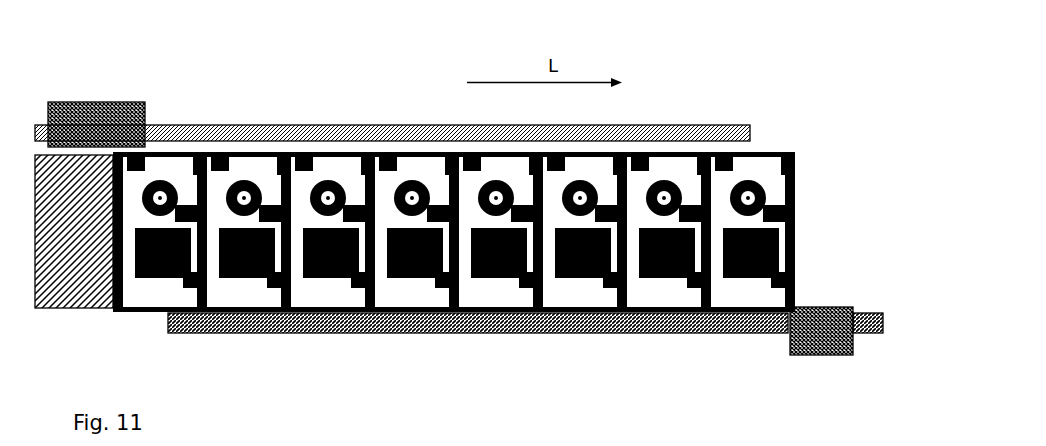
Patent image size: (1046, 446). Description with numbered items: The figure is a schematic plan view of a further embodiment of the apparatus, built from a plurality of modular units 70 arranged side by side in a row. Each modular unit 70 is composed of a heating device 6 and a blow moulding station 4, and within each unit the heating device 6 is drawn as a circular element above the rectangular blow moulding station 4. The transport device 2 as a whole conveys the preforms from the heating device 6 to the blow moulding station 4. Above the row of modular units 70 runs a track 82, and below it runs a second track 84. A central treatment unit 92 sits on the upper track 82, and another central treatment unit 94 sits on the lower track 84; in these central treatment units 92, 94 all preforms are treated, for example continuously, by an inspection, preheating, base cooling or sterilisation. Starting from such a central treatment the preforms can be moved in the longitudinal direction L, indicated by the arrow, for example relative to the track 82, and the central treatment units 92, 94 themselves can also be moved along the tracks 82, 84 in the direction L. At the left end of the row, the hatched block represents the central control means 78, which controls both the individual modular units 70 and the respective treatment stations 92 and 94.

The transport device 2 is at (268, 212).
The blow moulding station 4 is at (145, 278).
The heating device 6 is at (166, 178).
The modular unit 70 is at (421, 168).
The central control means 78 is at (67, 310).
The track 82 is at (323, 135).
The track 84 is at (435, 330).
The central treatment unit 92 is at (78, 103).
The central treatment unit 94 is at (818, 353).